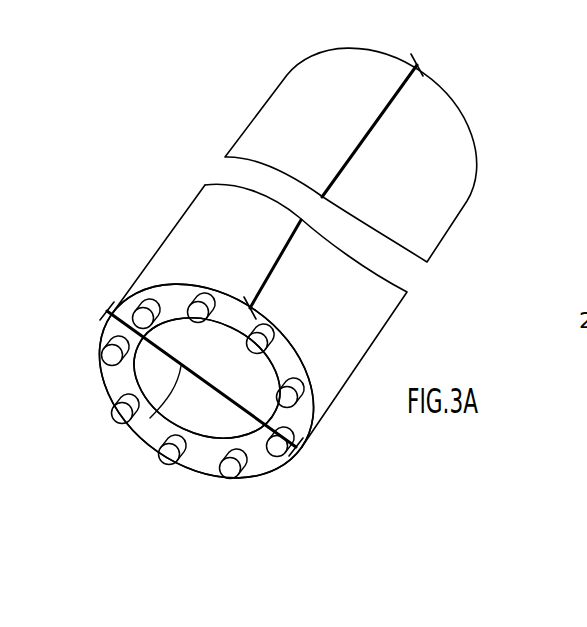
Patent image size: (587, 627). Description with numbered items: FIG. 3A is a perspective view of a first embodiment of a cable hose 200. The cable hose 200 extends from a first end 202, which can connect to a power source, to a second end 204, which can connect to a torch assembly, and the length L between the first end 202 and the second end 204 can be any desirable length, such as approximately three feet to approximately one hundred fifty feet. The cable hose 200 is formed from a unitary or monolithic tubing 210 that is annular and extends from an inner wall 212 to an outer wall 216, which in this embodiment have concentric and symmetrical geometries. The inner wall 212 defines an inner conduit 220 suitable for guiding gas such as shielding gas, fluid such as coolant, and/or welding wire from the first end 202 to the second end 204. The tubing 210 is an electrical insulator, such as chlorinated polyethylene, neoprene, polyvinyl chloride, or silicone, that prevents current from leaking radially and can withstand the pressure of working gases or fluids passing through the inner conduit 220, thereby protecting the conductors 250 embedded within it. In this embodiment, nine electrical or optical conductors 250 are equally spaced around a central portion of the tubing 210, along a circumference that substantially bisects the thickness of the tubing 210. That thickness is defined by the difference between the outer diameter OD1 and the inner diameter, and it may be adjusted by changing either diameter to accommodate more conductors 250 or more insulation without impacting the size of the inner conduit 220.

The cable hose 200 is at (163, 172).
The first end 202 is at (127, 298).
The second end 204 is at (317, 50).
The tubing 210 is at (232, 142).
The inner wall 212 is at (205, 437).
The outer wall 216 is at (102, 385).
The inner conduit 220 is at (190, 346).
The conductors 250 is at (233, 477).
The length L is at (333, 186).
The outer diameter OD1 is at (188, 385).